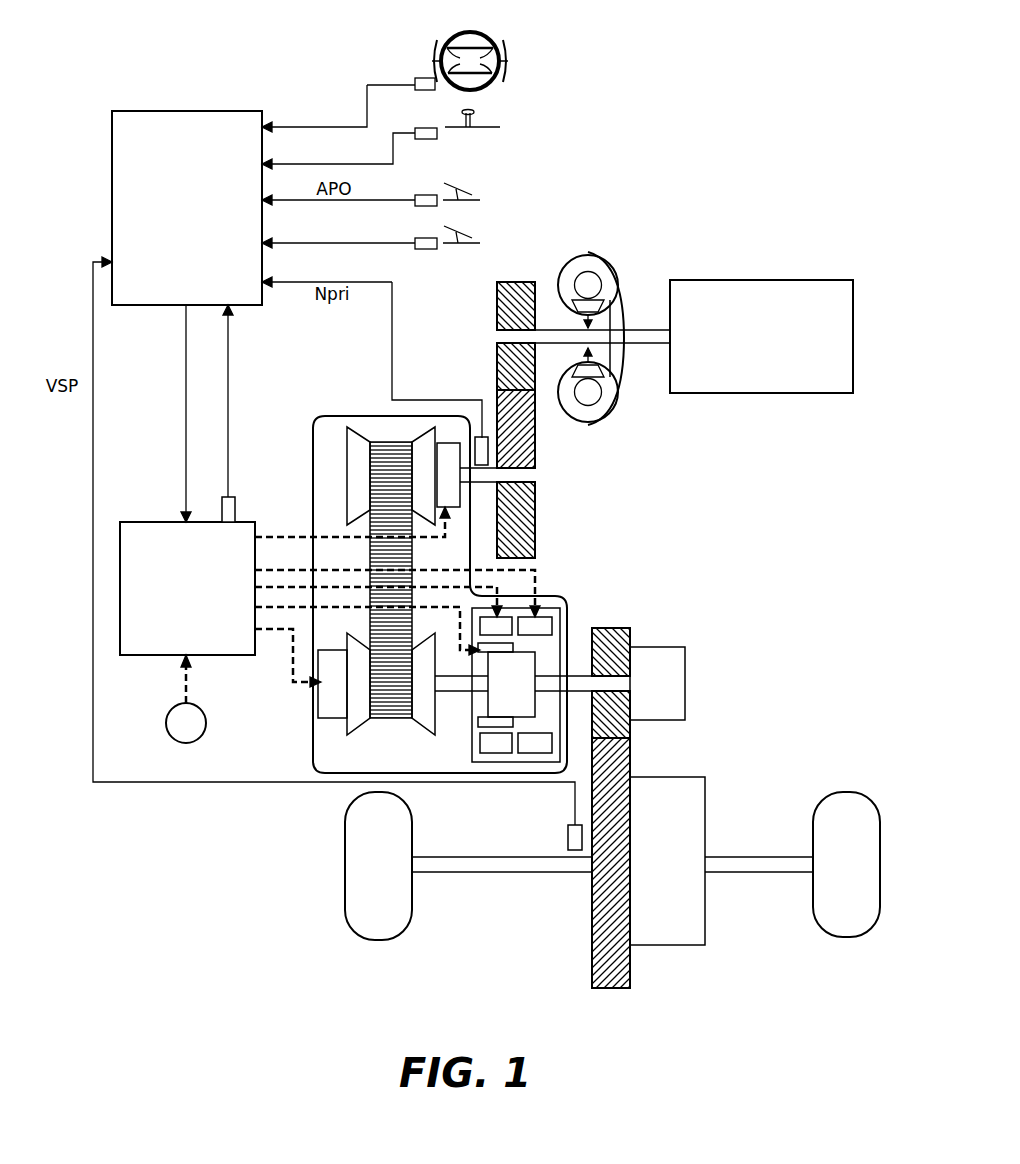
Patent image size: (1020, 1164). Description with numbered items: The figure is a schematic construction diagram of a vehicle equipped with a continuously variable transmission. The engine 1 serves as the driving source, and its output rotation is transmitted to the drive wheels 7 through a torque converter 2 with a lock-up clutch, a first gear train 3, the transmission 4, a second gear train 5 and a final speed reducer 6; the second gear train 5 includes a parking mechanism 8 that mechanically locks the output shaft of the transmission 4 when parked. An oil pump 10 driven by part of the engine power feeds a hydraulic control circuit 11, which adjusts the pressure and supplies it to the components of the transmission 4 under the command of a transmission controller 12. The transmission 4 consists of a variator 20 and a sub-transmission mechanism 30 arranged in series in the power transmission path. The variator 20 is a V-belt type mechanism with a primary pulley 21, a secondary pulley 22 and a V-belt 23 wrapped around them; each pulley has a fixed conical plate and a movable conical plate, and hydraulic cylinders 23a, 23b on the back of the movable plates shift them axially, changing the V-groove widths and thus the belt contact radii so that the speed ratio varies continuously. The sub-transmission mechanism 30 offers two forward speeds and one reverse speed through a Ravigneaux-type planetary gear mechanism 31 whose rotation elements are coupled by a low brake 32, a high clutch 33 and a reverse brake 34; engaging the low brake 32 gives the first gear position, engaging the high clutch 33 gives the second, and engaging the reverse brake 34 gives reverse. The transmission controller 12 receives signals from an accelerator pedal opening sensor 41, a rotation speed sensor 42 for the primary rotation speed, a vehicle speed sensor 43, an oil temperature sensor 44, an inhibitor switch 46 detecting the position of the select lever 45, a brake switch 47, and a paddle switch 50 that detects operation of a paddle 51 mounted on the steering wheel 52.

The engine 1 is at (838, 293).
The torque converter 2 is at (620, 282).
The first gear train 3 is at (518, 272).
The transmission 4 is at (450, 557).
The second gear train 5 is at (612, 1000).
The final speed reducer 6 is at (665, 935).
The drive wheels 7 is at (378, 923).
The parking mechanism 8 is at (668, 675).
The oil pump 10 is at (168, 712).
The hydraulic control circuit 11 is at (142, 527).
The transmission controller 12 is at (250, 112).
The variator 20 is at (333, 445).
The primary pulley 21 is at (358, 475).
The secondary pulley 22 is at (325, 730).
The V-belt 23 is at (388, 440).
The hydraulic cylinder 23a is at (445, 447).
The hydraulic cylinder 23b is at (325, 695).
The sub-transmission mechanism 30 is at (539, 638).
The Ravigneaux-type planetary gear mechanism 31 is at (517, 678).
The low brake 32 is at (498, 628).
The high clutch 33 is at (478, 733).
The reverse brake 34 is at (533, 627).
The accelerator pedal opening sensor 41 is at (437, 205).
The rotation speed sensor 42 is at (480, 440).
The vehicle speed sensor 43 is at (567, 830).
The oil temperature sensor 44 is at (235, 507).
The select lever 45 is at (490, 125).
The inhibitor switch 46 is at (428, 139).
The brake switch 47 is at (437, 249).
The paddle switch 50 is at (418, 78).
The paddle 51 is at (510, 56).
The steering wheel 52 is at (474, 32).